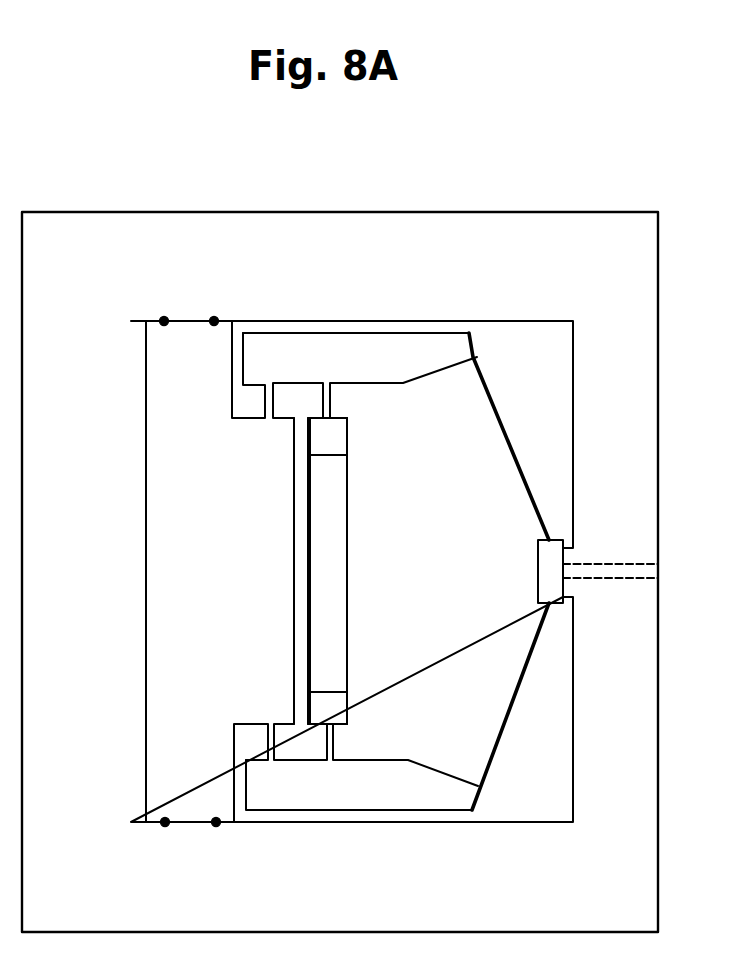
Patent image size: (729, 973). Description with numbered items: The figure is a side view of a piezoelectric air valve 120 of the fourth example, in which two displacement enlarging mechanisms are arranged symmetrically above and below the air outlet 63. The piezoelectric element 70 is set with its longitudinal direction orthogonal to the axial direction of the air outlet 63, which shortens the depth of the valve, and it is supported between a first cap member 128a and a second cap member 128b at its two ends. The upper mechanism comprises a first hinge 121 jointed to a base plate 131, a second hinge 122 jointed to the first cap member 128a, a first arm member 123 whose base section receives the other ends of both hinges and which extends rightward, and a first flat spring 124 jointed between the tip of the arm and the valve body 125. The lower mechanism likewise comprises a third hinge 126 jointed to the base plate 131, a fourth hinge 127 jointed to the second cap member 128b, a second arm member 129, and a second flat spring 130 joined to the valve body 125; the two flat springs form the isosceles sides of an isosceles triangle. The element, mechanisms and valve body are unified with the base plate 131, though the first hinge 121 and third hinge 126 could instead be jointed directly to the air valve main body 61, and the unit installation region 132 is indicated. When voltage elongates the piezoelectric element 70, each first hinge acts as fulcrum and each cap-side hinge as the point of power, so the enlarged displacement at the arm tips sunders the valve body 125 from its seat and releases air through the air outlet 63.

The air valve main body 61 is at (185, 228).
The piezoelectric air valve 120 is at (391, 177).
The air outlet 63 is at (640, 568).
The piezoelectric element 70 is at (333, 542).
The first hinge 121 is at (268, 397).
The second hinge 122 is at (329, 398).
The first arm member 123 is at (342, 343).
The first flat spring 124 is at (530, 484).
The valve body 125 is at (555, 587).
The third hinge 126 is at (272, 742).
The fourth hinge 127 is at (330, 741).
The first cap member 128a is at (333, 435).
The second cap member 128b is at (333, 705).
The second arm member 129 is at (352, 795).
The second flat spring 130 is at (510, 715).
The base plate 131 is at (168, 587).
The unit installation region 132 is at (140, 692).